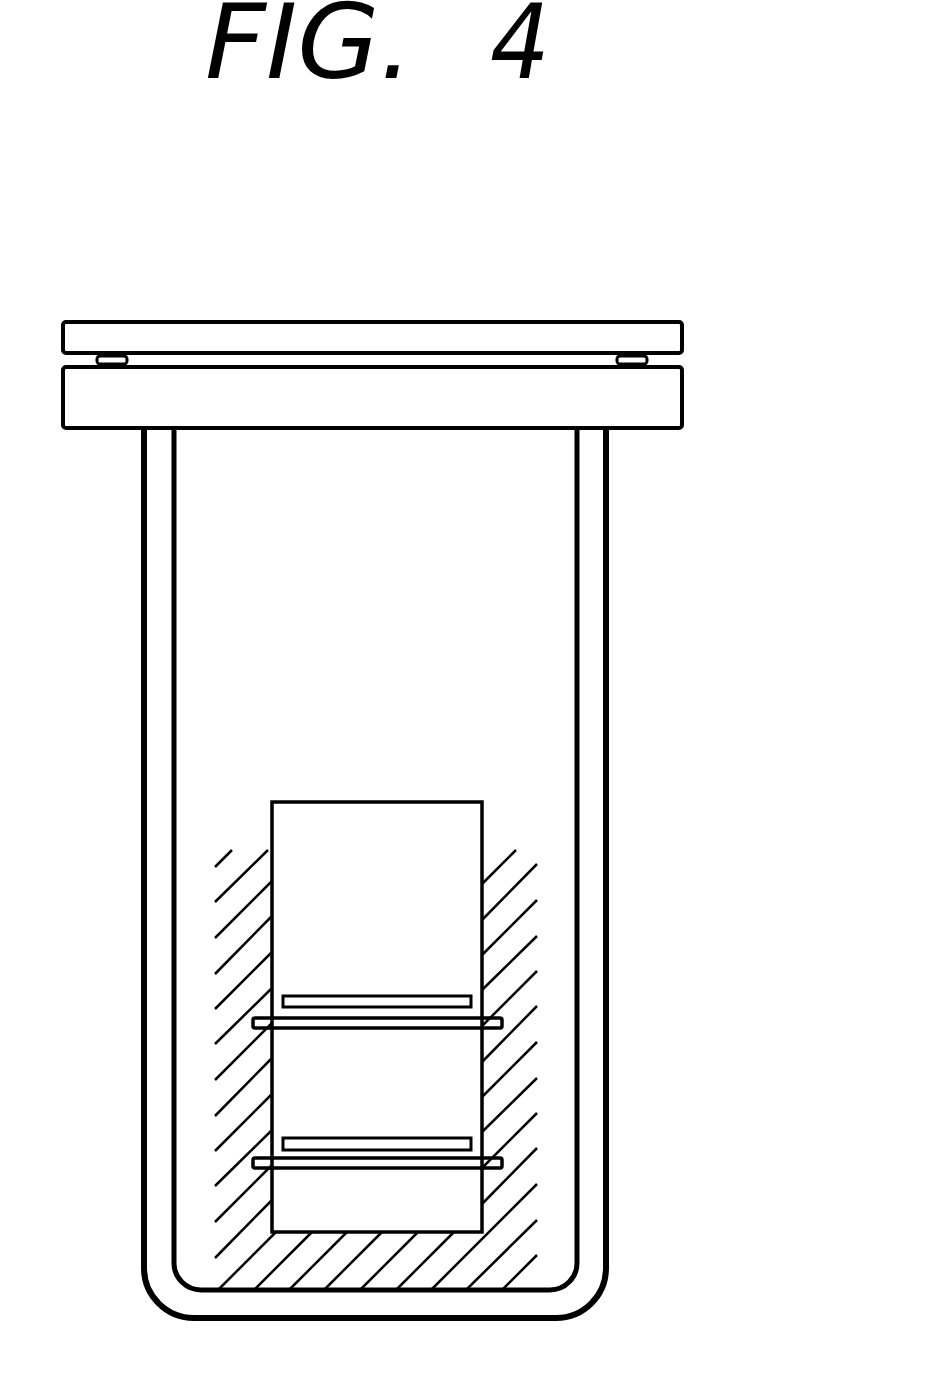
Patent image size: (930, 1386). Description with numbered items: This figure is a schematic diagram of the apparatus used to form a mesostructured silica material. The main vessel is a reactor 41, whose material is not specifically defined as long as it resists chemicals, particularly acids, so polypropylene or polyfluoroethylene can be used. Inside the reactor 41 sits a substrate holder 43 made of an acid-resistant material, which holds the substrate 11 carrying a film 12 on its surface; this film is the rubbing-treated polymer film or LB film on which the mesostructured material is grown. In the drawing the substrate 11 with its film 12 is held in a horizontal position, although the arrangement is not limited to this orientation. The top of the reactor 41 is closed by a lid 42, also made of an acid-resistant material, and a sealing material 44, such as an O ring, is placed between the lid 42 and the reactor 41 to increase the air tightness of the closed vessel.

The substrate 11 is at (457, 1067).
The film 12 is at (352, 1135).
The reactor 41 is at (608, 586).
The lid 42 is at (528, 338).
The substrate holder 43 is at (524, 893).
The sealing material 44 is at (642, 348).